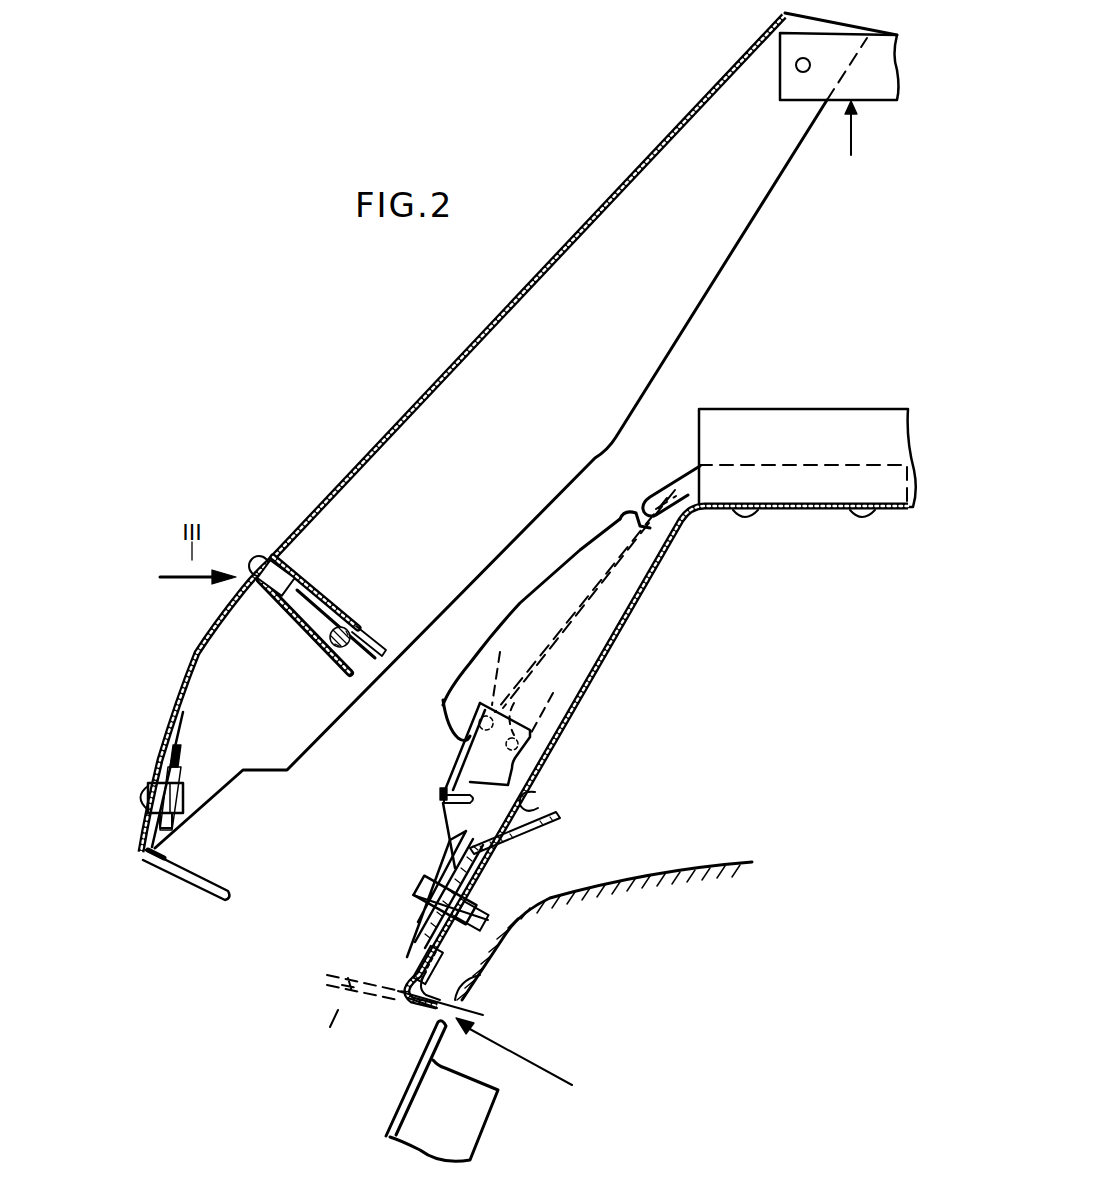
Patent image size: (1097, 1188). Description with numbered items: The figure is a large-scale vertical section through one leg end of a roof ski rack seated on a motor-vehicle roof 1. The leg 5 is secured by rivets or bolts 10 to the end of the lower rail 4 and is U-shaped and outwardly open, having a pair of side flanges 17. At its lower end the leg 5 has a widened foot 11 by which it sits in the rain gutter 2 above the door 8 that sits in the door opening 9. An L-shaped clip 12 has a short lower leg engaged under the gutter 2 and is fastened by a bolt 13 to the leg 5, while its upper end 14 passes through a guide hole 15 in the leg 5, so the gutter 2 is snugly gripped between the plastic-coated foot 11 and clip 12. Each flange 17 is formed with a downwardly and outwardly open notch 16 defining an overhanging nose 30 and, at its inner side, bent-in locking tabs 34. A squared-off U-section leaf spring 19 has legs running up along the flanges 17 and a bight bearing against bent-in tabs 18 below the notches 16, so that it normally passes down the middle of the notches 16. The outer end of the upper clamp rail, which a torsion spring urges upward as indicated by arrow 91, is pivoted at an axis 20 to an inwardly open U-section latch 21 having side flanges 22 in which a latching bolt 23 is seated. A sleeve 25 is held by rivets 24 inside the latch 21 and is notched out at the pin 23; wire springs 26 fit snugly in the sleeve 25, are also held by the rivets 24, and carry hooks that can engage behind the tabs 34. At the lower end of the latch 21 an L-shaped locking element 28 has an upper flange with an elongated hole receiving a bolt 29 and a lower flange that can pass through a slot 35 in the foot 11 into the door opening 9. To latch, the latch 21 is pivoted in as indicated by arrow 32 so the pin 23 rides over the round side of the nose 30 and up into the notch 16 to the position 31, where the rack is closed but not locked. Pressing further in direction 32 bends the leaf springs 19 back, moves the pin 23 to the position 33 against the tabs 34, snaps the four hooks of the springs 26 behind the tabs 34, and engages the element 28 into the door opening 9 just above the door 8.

The motor-vehicle roof 1 is at (660, 875).
The rain gutter 2 is at (480, 975).
The lower rail 4 is at (838, 425).
The leg 5 is at (655, 590).
The door 8 is at (475, 1135).
The door opening 9 is at (521, 1058).
The rivets or bolts 10 is at (752, 514).
The widened region or foot 11 is at (480, 930).
The L-shaped clip 12 is at (405, 975).
The bolt 13 is at (430, 890).
The upper end of clip 14 is at (558, 818).
The guide hole 15 is at (545, 790).
The notch 16 is at (468, 768).
The side flanges 17 is at (595, 634).
The bent-in tabs 18 is at (440, 810).
The leaf spring 19 is at (455, 792).
The pivot axis 20 is at (796, 62).
The latch 21 is at (884, 46).
The side flanges of latch 22 is at (571, 377).
The latching bolt 23 is at (365, 627).
The rivets 24 is at (266, 556).
The sleeve or cup 25 is at (318, 582).
The wire springs 26 is at (343, 605).
The L-shaped locking element 28 is at (198, 882).
The bolt 29 is at (185, 800).
The overhanging nose 30 is at (448, 730).
The latched position 31 is at (505, 665).
The arrow 32 is at (380, 438).
The locked position 33 is at (540, 700).
The bent-in locking tabs 34 is at (525, 745).
The slot 35 is at (412, 1005).
The arrow 91 is at (851, 143).